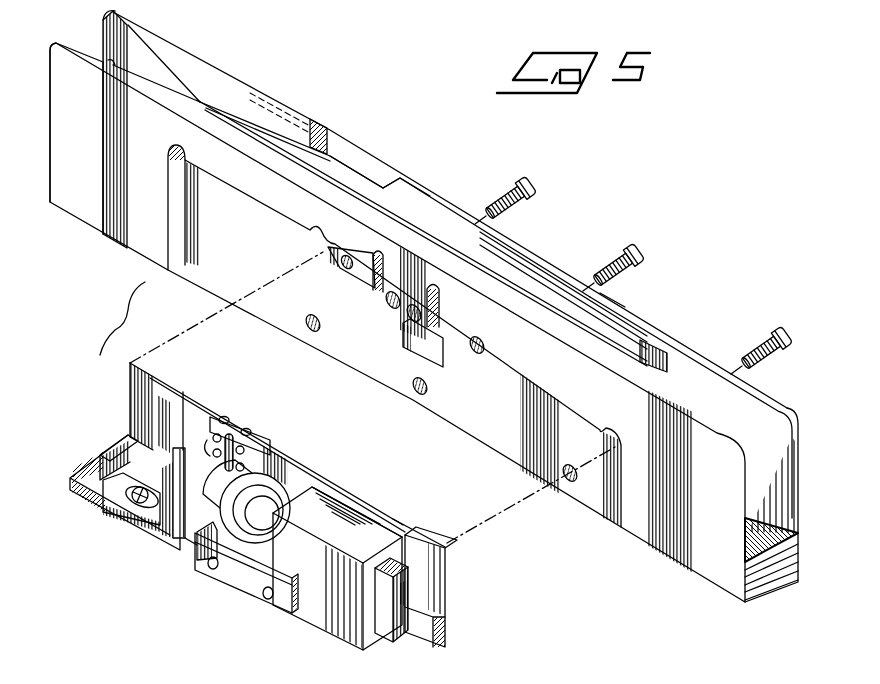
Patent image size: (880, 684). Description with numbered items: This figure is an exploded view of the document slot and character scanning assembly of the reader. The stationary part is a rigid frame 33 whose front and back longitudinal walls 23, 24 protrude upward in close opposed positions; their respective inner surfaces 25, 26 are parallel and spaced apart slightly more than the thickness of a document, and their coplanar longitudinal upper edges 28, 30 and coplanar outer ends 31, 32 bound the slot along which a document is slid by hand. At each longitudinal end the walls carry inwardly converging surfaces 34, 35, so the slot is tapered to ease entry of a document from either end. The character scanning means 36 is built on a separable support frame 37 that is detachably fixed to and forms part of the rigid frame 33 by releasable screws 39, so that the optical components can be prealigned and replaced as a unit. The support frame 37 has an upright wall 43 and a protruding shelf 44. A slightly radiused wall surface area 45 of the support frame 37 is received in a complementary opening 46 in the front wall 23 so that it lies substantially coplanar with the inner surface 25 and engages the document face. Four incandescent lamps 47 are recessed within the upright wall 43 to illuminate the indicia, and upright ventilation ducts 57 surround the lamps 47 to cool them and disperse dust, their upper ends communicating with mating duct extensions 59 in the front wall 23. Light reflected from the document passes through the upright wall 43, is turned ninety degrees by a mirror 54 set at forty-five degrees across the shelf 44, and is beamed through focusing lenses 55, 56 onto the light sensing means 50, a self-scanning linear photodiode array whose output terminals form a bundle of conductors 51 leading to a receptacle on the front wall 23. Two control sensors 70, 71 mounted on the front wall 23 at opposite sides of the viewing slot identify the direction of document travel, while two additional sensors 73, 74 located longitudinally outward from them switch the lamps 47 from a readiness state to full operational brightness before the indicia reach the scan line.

The front longitudinal wall 23 is at (523, 375).
The back longitudinal wall 24 is at (670, 343).
The inner surface of front wall 25 is at (575, 322).
The inner surface of back wall 26 is at (620, 330).
The longitudinal upper edge of front wall 28 is at (468, 268).
The longitudinal upper edge of back wall 30 is at (476, 268).
The outer end of front wall 31 is at (50, 125).
The outer end of back wall 32 is at (103, 26).
The rigid frame 33 is at (607, 301).
The inwardly converging surface 34 is at (106, 66).
The inwardly converging surface 35 is at (150, 60).
The character scanning means 36 is at (302, 464).
The separable support frame 37 is at (448, 576).
The releasable screws 39 is at (541, 192).
The upright wall 43 is at (380, 511).
The protruding shelf 44 is at (178, 547).
The wall surface area 45 is at (244, 424).
The complementary opening 46 is at (403, 347).
The incandescent lamps 47 is at (212, 440).
The light sensing means 50 is at (402, 530).
The bundle of conductors 51 is at (408, 642).
The mirror 54 is at (172, 461).
The focusing lens 55 is at (203, 560).
The focusing lens 56 is at (243, 565).
The ventilation ducts 57 is at (226, 418).
The duct extensions 59 is at (374, 253).
The control sensor 70 is at (407, 318).
The control sensor 71 is at (386, 303).
The additional sensor 73 is at (483, 346).
The additional sensor 74 is at (345, 266).